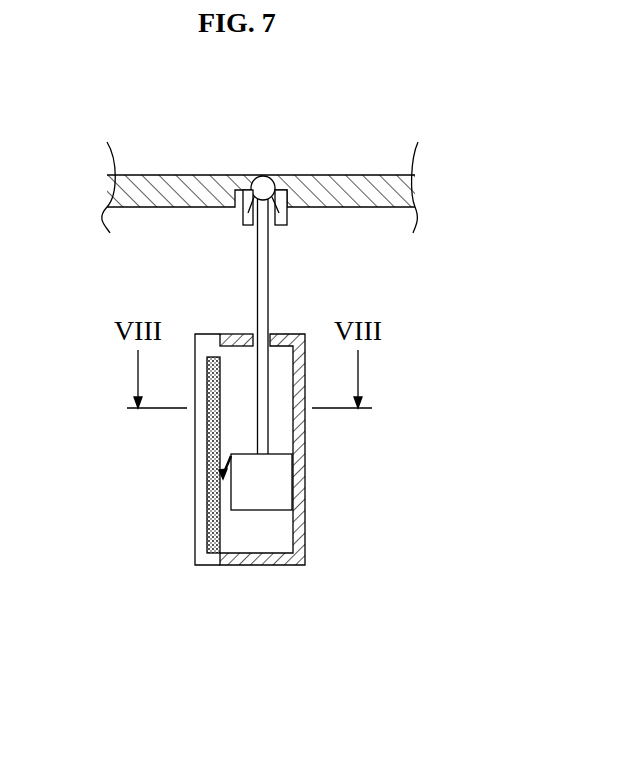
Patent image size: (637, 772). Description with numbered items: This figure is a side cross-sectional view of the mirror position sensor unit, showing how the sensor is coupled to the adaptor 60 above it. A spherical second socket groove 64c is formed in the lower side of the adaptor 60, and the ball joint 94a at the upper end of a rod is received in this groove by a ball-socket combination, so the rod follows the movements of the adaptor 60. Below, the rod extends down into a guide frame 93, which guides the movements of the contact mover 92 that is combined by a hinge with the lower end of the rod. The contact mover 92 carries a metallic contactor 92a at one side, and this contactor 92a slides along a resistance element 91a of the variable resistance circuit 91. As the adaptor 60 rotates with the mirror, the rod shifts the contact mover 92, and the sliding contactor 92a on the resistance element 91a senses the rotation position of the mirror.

The adaptor 60 is at (347, 187).
The second socket groove 64c is at (270, 178).
The ball joint 94a is at (256, 203).
The variable resistance circuit 91 is at (200, 495).
The resistance element 91a is at (220, 528).
The contact mover 92 is at (270, 483).
The contactor 92a is at (214, 460).
The guide frame 93 is at (297, 545).